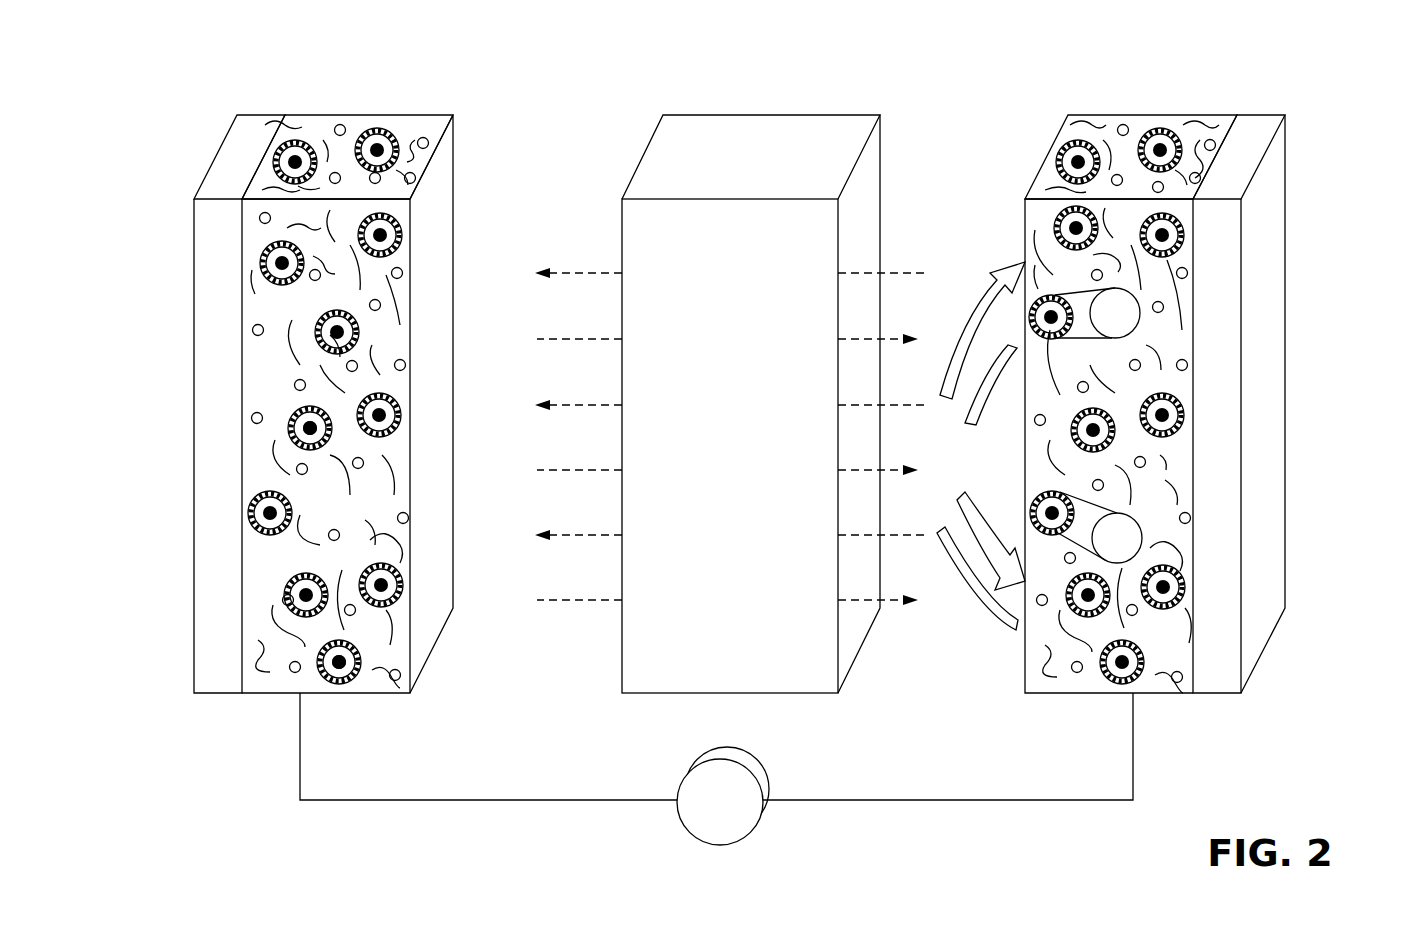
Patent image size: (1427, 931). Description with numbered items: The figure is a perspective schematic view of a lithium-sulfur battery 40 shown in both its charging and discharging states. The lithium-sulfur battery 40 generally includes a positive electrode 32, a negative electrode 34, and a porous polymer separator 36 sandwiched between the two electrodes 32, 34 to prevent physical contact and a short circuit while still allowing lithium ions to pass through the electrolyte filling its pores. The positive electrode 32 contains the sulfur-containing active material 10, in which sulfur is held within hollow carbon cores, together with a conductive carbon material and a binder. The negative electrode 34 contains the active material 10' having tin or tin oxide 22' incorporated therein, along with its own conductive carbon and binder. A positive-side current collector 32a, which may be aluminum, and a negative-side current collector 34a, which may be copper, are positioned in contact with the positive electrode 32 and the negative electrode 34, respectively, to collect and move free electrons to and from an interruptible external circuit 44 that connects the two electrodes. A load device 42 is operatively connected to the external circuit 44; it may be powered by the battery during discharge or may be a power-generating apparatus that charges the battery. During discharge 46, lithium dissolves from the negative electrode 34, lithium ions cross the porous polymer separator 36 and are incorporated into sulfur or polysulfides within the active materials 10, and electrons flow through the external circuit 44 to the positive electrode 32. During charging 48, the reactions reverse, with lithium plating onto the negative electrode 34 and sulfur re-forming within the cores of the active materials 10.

The active material 10 is at (1111, 360).
The active material 10' is at (302, 372).
The tin/tin oxide 22' is at (253, 603).
The positive electrode 32 is at (1187, 710).
The positive-side current collector 32a is at (1260, 232).
The negative electrode 34 is at (315, 503).
The negative-side current collector 34a is at (215, 542).
The porous polymer separator 36 is at (748, 155).
The lithium-sulfur battery 40 is at (1306, 56).
The load device 42 is at (708, 817).
The external circuit 44 is at (1017, 800).
The battery discharge 46 is at (890, 339).
The charging 48 is at (588, 273).